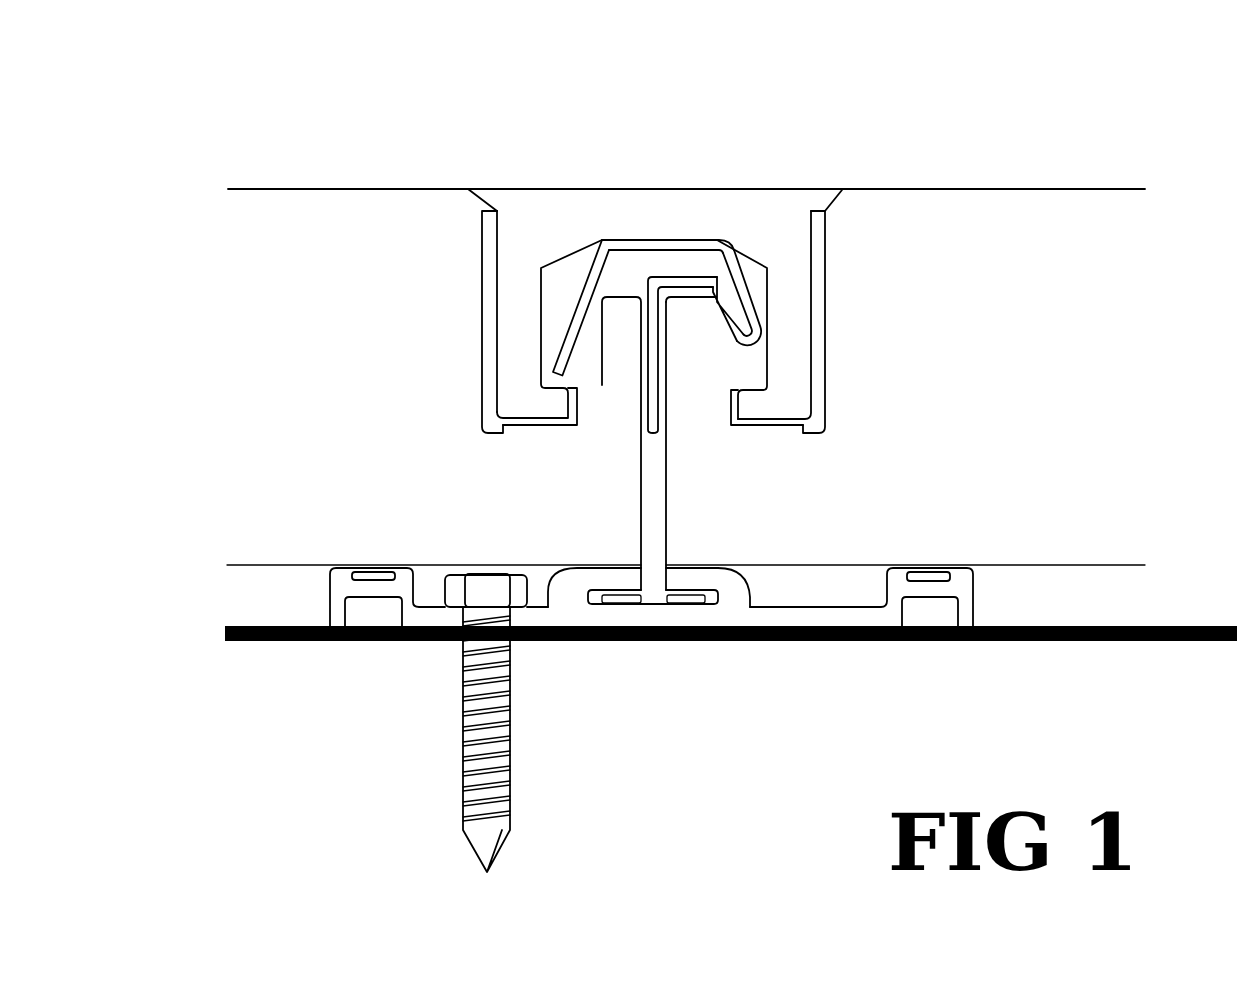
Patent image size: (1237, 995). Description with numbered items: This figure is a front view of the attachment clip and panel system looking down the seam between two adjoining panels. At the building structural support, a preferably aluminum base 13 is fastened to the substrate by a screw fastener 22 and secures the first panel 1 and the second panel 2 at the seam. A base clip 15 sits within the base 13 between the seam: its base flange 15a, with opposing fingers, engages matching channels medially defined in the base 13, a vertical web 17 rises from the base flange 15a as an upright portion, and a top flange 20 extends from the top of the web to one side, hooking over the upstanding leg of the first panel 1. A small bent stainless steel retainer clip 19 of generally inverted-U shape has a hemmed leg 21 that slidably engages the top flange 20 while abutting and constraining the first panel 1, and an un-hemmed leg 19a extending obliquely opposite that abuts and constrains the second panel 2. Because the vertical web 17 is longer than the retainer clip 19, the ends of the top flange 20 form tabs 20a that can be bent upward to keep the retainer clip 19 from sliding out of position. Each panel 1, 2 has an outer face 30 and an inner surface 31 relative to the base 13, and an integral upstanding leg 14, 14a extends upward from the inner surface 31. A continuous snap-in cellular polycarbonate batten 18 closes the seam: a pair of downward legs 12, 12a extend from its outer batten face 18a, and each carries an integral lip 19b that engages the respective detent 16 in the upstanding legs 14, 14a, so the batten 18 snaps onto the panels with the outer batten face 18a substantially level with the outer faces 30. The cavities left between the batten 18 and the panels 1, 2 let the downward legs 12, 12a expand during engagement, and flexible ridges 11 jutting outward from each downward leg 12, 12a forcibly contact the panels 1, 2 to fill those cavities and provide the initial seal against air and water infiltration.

The first panel 1 is at (1066, 311).
The second panel 2 is at (275, 313).
The flexible ridges 11 is at (570, 337).
The downward leg 12 is at (493, 300).
The downward leg 12a is at (818, 315).
The base 13 is at (322, 577).
The upstanding leg 14 is at (697, 355).
The upstanding leg 14a is at (585, 378).
The base clip 15 is at (653, 310).
The base flange 15a is at (620, 602).
The detent 16 is at (737, 380).
The vertical web 17 is at (655, 482).
The batten 18 is at (632, 185).
The outer batten face 18a is at (601, 238).
The retainer clip 19 is at (593, 262).
The un-hemmed leg 19a is at (496, 244).
The integral lip 19b is at (748, 398).
The top flange 20 is at (692, 280).
The tabs 20a is at (666, 268).
The hemmed leg 21 is at (770, 352).
The screw fastener 22 is at (448, 800).
The outer face 30 is at (258, 188).
The inner surface 31 is at (1037, 567).